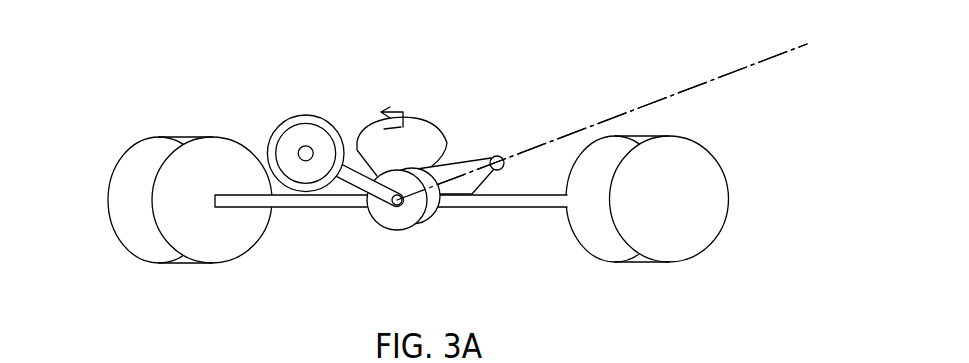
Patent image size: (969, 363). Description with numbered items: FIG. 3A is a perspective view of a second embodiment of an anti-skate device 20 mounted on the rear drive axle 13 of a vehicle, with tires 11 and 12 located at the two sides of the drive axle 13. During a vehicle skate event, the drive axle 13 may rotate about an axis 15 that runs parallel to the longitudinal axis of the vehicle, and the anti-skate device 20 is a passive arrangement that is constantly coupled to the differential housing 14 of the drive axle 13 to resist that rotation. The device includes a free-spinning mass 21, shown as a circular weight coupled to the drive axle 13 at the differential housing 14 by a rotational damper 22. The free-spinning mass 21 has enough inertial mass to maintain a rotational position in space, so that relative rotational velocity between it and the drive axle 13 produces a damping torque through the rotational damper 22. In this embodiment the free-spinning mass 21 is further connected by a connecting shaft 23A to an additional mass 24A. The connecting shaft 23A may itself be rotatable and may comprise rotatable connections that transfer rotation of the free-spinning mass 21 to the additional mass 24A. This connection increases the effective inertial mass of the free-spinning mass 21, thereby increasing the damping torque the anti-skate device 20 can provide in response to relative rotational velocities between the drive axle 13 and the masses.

The tire 11 is at (108, 189).
The tire 12 is at (728, 192).
The drive axle 13 is at (497, 208).
The differential housing 14 is at (432, 215).
The axis 15 is at (785, 52).
The anti-skate device 20 is at (447, 144).
The free-spinning mass 21 is at (372, 220).
The rotational damper 22 is at (432, 124).
The connecting shaft 23A is at (353, 195).
The additional mass 24A is at (282, 125).